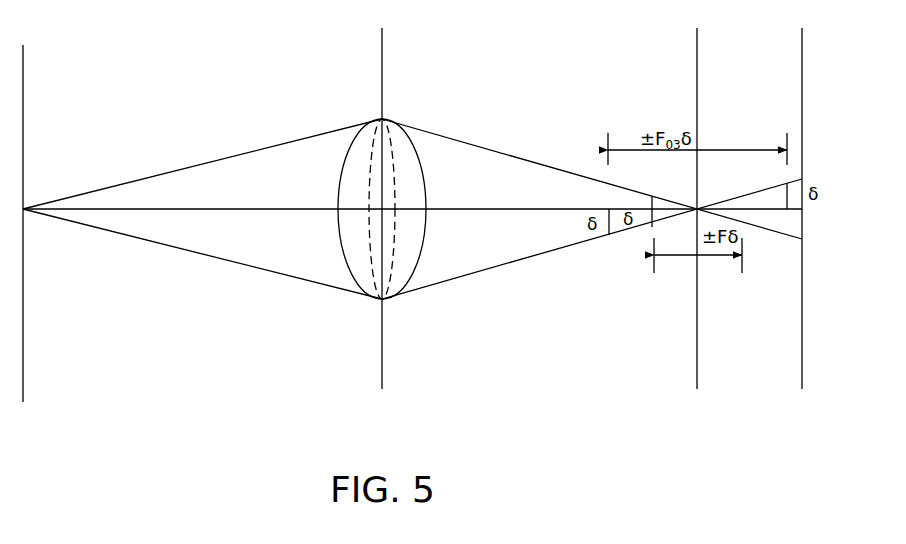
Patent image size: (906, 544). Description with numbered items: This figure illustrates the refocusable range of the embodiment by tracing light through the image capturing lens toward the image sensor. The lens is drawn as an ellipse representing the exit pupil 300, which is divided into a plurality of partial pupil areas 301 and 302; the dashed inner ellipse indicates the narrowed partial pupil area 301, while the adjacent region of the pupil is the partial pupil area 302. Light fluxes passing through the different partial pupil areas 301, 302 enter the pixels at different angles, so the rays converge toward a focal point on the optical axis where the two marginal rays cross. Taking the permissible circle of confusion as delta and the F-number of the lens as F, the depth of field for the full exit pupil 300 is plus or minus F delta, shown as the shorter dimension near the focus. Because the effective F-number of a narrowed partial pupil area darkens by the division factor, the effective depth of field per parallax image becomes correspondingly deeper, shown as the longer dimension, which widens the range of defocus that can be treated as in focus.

The exit pupil 300 is at (350, 271).
The partial pupil area 301 is at (392, 270).
The partial pupil area 302 is at (393, 168).